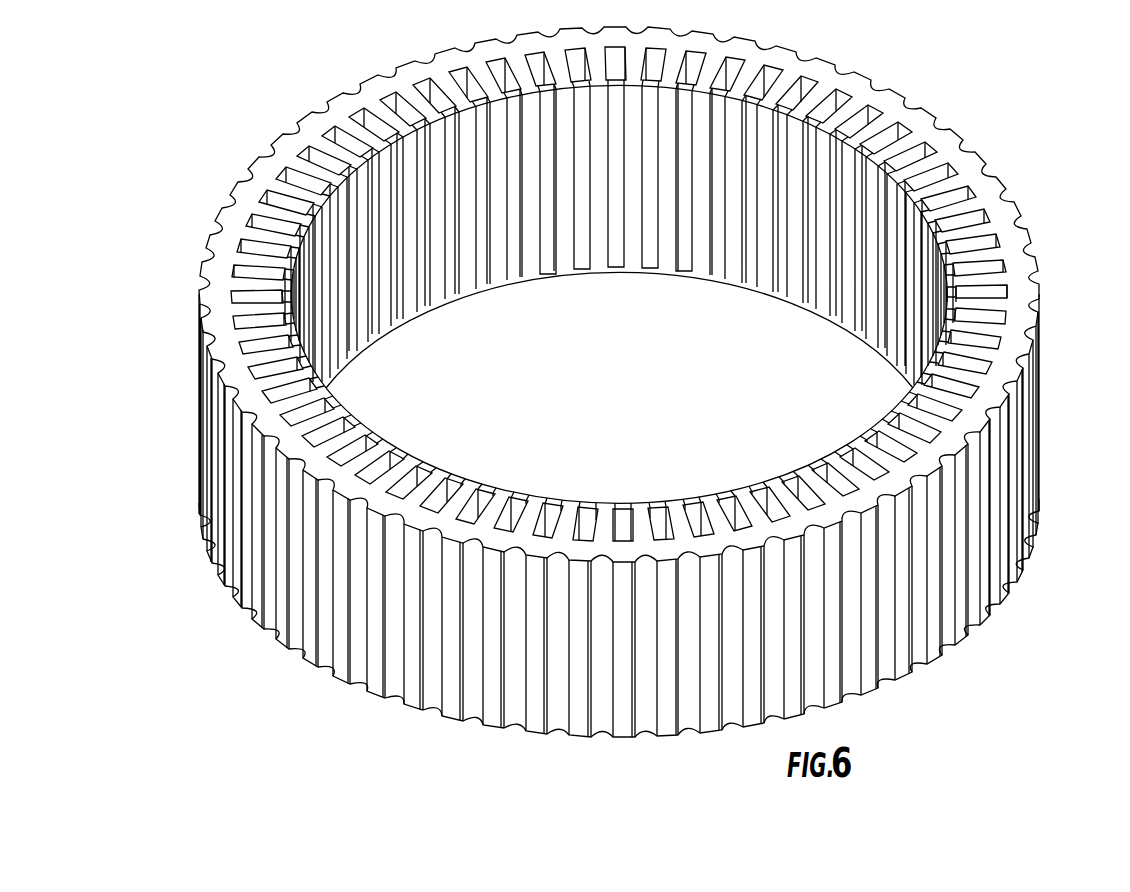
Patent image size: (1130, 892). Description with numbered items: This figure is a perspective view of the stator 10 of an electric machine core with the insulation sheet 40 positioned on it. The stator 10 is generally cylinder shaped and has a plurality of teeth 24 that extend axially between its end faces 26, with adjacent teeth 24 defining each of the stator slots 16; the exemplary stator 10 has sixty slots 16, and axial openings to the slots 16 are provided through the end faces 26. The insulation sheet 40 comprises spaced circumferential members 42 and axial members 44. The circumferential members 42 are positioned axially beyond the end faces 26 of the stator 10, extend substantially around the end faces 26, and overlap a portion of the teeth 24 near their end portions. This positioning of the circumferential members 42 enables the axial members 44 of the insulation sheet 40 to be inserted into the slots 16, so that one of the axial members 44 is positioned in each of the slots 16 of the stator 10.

The stator 10 is at (650, 382).
The stator slots 16 is at (450, 470).
The teeth 24 is at (347, 463).
The end face 26 is at (1010, 215).
The insulation sheet 40 is at (743, 485).
The circumferential members 42 is at (570, 502).
The axial members 44 is at (660, 505).